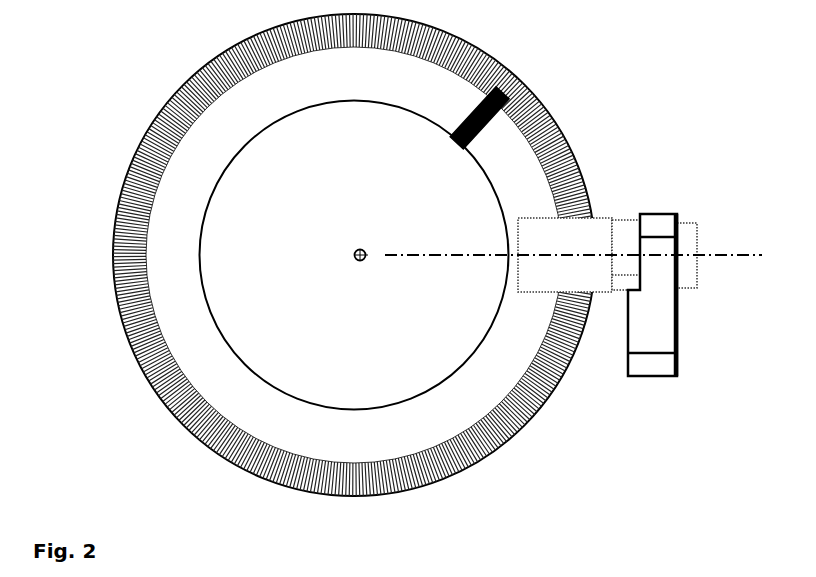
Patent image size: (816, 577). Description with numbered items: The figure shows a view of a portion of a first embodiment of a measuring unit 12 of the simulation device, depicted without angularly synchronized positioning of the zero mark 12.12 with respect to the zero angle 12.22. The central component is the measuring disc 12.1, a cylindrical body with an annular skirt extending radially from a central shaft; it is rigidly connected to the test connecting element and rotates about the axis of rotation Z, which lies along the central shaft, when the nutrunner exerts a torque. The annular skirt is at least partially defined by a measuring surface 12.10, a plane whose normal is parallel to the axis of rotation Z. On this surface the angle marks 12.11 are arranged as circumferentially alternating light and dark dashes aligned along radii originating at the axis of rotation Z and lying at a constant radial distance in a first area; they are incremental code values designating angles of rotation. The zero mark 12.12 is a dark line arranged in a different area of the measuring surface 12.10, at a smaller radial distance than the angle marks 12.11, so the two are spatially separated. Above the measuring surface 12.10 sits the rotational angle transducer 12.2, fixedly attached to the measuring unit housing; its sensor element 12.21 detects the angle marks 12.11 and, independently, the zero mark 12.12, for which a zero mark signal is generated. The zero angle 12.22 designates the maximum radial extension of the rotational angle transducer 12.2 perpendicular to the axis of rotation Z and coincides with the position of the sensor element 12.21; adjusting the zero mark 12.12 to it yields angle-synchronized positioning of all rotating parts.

The measuring unit 12 is at (99, 75).
The measuring disc 12.1 is at (507, 172).
The measuring surface 12.10 is at (283, 264).
The angle marks 12.11 is at (422, 42).
The zero mark 12.12 is at (457, 142).
The rotational angle transducer 12.2 is at (655, 328).
The sensor element 12.21 is at (568, 283).
The zero angle 12.22 is at (721, 252).
The axis of rotation Z is at (360, 262).